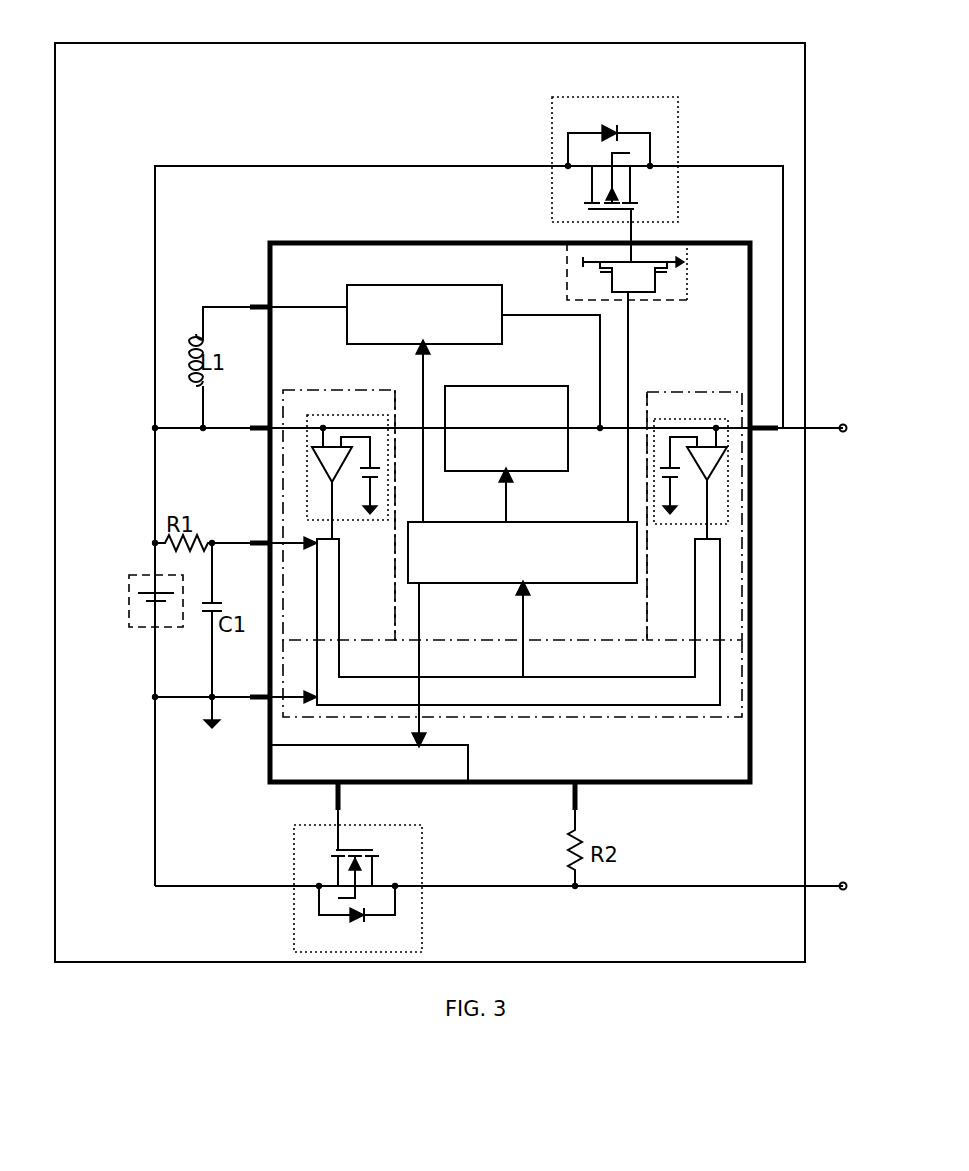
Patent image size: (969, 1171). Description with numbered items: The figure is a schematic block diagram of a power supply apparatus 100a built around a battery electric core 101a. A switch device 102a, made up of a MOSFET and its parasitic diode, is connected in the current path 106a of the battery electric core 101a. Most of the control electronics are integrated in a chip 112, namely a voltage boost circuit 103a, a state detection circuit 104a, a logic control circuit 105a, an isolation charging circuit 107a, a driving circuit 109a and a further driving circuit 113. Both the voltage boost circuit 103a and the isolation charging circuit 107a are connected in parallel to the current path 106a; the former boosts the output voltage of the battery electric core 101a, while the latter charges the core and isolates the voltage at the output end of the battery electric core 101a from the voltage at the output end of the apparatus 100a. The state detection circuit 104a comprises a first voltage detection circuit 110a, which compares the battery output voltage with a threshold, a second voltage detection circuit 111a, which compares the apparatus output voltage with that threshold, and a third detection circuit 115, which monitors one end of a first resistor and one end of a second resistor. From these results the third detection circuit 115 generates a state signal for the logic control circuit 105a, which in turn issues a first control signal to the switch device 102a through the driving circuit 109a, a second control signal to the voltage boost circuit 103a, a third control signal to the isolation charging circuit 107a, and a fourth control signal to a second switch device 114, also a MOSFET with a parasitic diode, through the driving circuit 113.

The apparatus 100a is at (147, 92).
The chip 112 is at (333, 242).
The current path 106a is at (432, 140).
The switch device 102a is at (680, 120).
The driving circuit 109a is at (565, 272).
The voltage boost circuit 103a is at (475, 358).
The isolation charging circuit 107a is at (506, 428).
The logic control circuit 105a is at (524, 543).
The first voltage detection circuit 110a is at (307, 455).
The second voltage detection circuit 111a is at (683, 412).
The third detection circuit 115 is at (496, 621).
The state detection circuit 104a is at (660, 719).
The driving circuit 113 is at (369, 763).
The switch device 114 is at (294, 940).
The battery electric core 101a is at (130, 627).